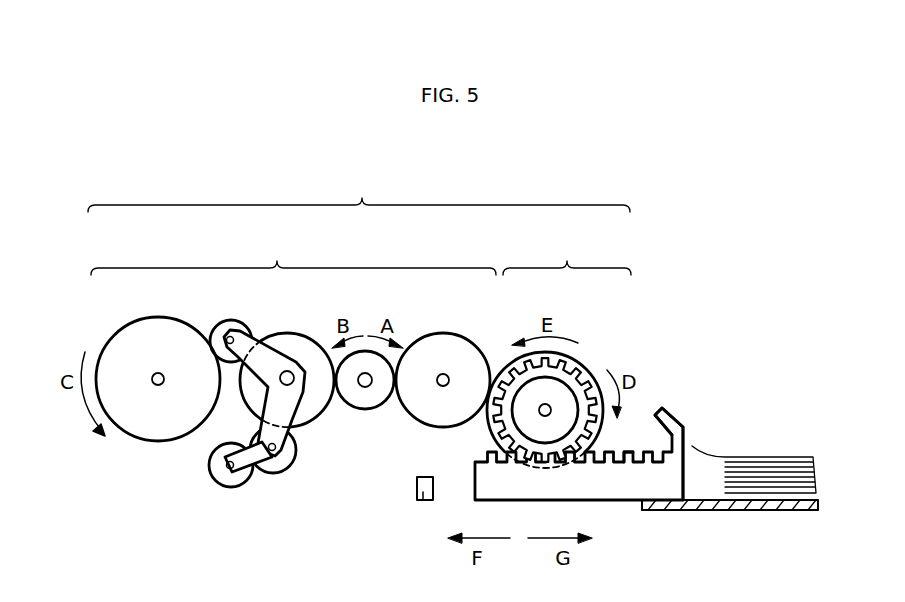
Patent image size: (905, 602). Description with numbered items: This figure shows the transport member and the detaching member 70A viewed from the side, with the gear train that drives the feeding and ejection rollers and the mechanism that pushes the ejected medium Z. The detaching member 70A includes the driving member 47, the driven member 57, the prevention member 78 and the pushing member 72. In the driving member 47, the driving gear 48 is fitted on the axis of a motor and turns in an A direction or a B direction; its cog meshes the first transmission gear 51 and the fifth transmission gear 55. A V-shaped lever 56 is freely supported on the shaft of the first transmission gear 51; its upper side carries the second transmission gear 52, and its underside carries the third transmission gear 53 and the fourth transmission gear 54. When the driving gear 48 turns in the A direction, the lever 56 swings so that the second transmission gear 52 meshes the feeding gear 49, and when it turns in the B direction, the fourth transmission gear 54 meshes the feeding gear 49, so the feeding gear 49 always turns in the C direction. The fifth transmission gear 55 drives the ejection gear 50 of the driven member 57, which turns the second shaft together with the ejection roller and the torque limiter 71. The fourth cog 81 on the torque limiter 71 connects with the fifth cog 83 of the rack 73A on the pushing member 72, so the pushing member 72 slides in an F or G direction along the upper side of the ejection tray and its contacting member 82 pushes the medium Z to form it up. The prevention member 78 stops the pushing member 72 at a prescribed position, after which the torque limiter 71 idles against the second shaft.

The driving member 47 is at (293, 254).
The driving gear 48 is at (381, 408).
The feeding gear 49 is at (136, 319).
The ejection gear 50 is at (578, 376).
The first transmission gear 51 is at (288, 333).
The second transmission gear 52 is at (227, 321).
The third transmission gear 53 is at (283, 473).
The fourth transmission gear 54 is at (237, 485).
The fifth transmission gear 55 is at (438, 333).
The lever 56 is at (300, 408).
The driven member 57 is at (567, 254).
The detaching member 70A is at (694, 318).
The torque limiter 71 is at (522, 381).
The pushing member 72 is at (673, 414).
The rack 73A is at (627, 456).
The prevention member 78 is at (423, 502).
The fourth cog 81 is at (600, 362).
The contacting member 82 is at (692, 446).
The fifth cog 83 is at (621, 446).
The medium Z is at (790, 455).